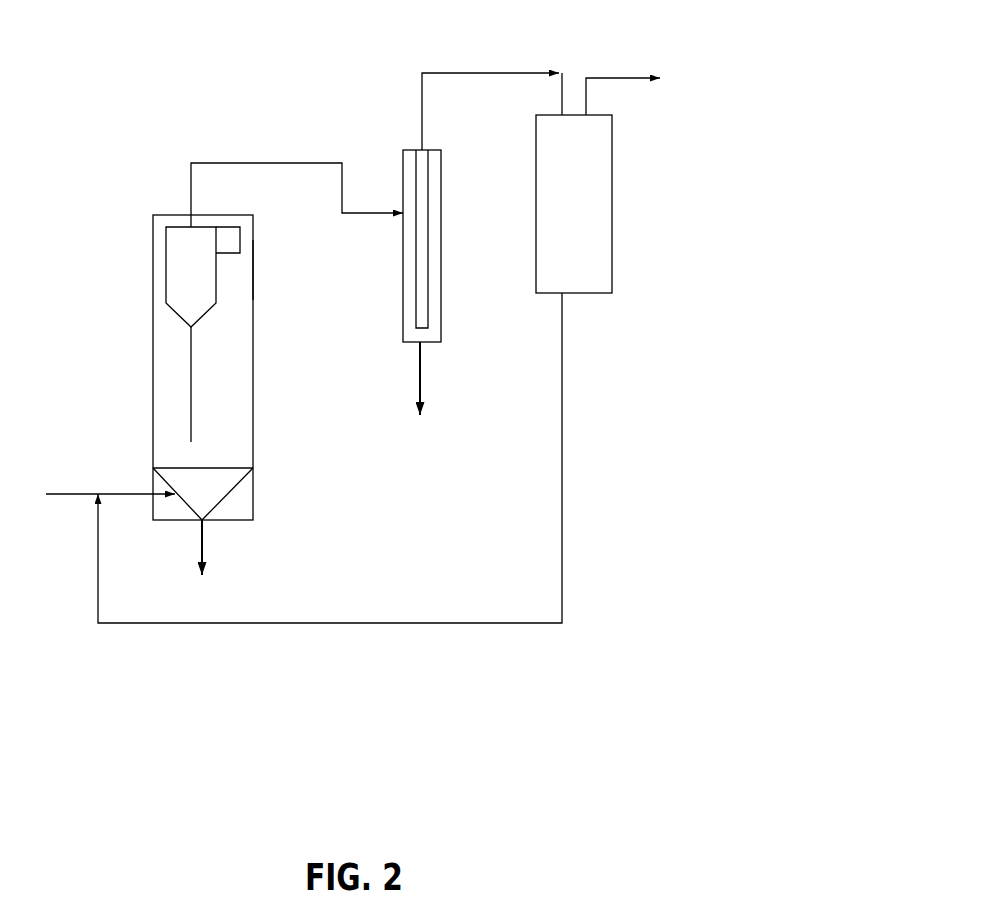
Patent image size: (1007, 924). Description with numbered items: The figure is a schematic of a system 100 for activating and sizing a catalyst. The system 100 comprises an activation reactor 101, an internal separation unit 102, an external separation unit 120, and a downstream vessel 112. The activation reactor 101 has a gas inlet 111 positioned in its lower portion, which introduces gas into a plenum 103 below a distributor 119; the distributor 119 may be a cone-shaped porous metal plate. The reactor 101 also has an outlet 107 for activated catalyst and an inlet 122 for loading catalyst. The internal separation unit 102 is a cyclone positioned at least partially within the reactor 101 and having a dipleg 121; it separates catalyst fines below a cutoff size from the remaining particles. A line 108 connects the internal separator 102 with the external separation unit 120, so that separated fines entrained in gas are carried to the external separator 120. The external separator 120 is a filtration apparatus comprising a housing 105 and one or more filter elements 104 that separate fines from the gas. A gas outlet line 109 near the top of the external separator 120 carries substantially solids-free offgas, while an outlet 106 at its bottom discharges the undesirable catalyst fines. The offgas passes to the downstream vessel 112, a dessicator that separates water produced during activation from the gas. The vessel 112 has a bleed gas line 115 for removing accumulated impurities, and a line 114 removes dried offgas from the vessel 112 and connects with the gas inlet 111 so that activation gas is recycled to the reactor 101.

The system 100 is at (167, 122).
The activation reactor 101 is at (213, 379).
The internal separation unit 102 is at (197, 261).
The plenum 103 is at (177, 505).
The filter element 104 is at (414, 213).
The housing 105 is at (412, 317).
The outlet 106 is at (448, 378).
The outlet for activated catalyst 107 is at (203, 561).
The line 108 is at (297, 178).
The gas outlet line 109 is at (492, 96).
The gas inlet 111 is at (104, 479).
The downstream vessel 112 is at (579, 195).
The line 114 is at (330, 458).
The bleed gas line 115 is at (623, 81).
The distributor 119 is at (203, 494).
The external separation unit 120 is at (403, 150).
The dipleg 121 is at (187, 364).
The inlet 122 is at (253, 270).